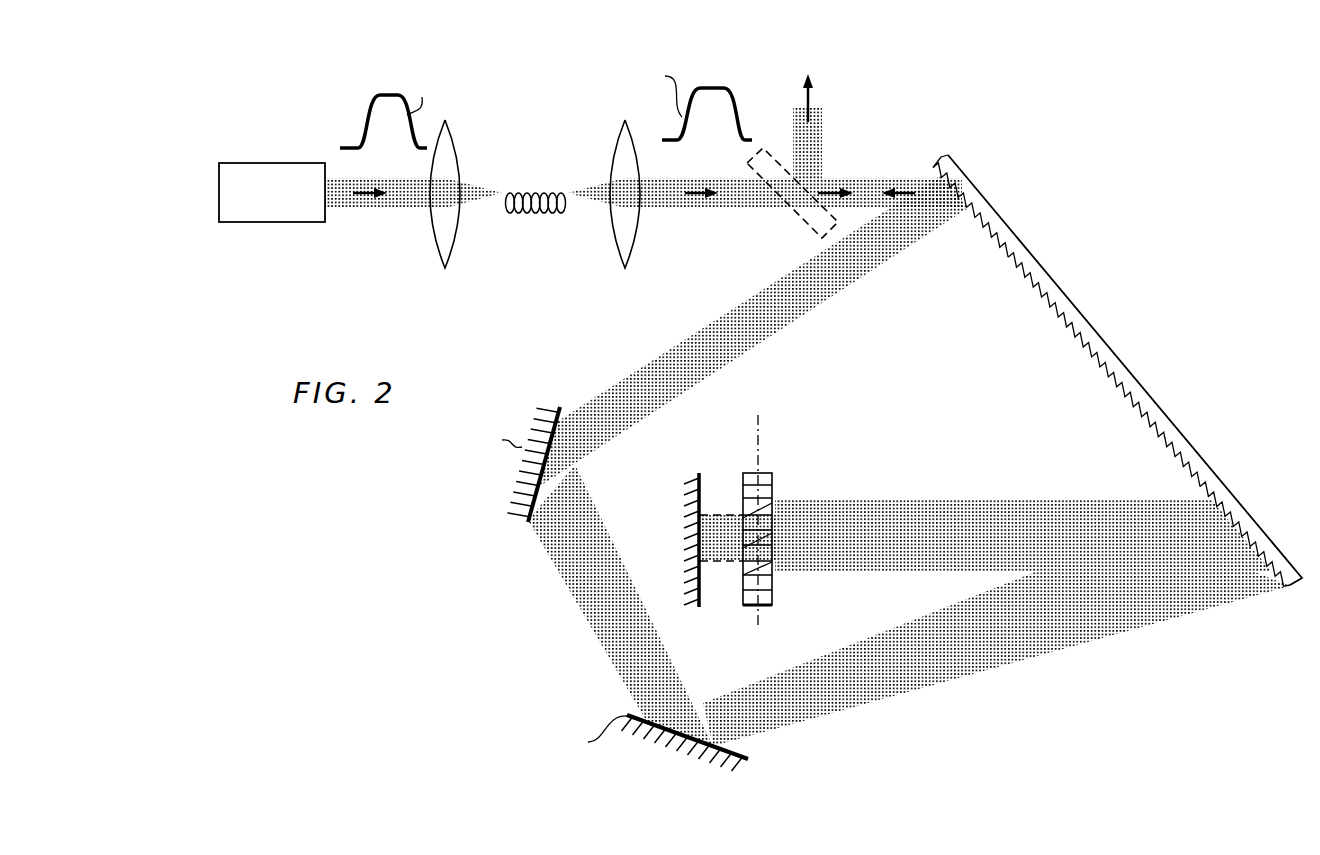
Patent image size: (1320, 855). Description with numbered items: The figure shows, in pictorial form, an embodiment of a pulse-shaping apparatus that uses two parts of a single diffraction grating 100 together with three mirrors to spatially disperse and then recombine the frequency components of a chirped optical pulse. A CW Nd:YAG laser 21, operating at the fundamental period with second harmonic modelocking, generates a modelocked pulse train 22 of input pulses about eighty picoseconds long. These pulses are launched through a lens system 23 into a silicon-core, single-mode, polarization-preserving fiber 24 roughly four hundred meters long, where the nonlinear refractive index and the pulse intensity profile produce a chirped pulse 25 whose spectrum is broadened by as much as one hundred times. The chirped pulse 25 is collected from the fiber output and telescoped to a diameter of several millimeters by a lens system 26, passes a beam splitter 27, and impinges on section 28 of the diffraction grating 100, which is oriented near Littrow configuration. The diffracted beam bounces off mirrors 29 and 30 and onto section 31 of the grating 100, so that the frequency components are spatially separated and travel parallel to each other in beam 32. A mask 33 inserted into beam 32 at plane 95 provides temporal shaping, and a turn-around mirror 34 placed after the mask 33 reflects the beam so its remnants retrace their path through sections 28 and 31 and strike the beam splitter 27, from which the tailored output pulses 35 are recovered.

The CW Nd:YAG laser 21 is at (300, 163).
The modelocked pulse train 22 is at (372, 113).
The lens system 23 is at (433, 232).
The fiber 24 is at (533, 215).
The chirped pulse 25 is at (718, 90).
The lens system 26 is at (614, 240).
The beam splitter 27 is at (810, 225).
The section of diffraction grating 28 is at (960, 188).
The mirror 29 is at (560, 406).
The mirror 30 is at (750, 759).
The section of diffraction grating 31 is at (1248, 511).
The beam 32 is at (955, 500).
The mask 33 is at (772, 486).
The turn-around mirror 34 is at (702, 474).
The tailored output pulses 35 is at (812, 97).
The plane 95 is at (760, 426).
The diffraction grating 100 is at (1018, 266).